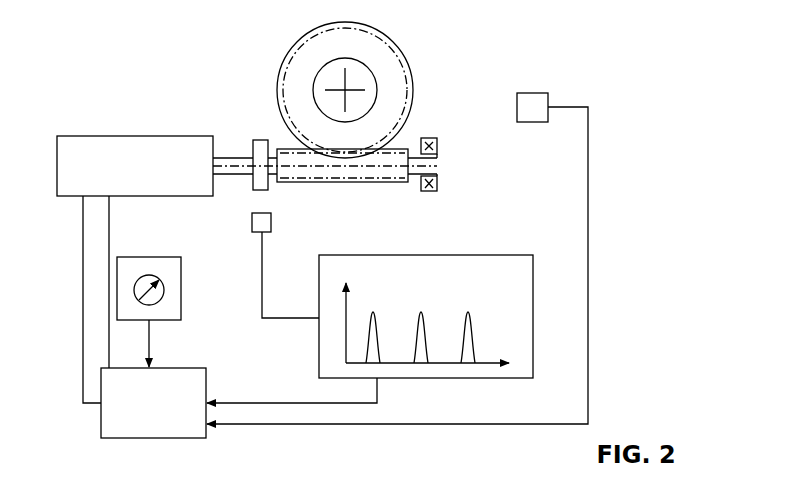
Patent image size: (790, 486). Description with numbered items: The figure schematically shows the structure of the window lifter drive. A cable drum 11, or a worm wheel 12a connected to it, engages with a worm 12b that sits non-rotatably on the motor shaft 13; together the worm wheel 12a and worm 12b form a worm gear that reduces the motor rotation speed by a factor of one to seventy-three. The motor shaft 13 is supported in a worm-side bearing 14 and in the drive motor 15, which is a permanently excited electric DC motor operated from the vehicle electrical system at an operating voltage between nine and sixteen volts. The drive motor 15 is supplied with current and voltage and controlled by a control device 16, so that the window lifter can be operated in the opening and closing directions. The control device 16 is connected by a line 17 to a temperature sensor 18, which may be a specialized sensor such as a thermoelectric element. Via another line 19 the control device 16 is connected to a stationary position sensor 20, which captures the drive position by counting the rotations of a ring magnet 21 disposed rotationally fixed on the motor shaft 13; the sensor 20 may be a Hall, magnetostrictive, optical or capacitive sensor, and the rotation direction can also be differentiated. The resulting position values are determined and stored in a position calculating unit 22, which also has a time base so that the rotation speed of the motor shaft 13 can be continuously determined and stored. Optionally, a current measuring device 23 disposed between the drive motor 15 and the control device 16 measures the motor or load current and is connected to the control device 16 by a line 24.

The cable drum 11 is at (360, 61).
The worm wheel 12a is at (412, 72).
The worm 12b is at (358, 182).
The motor shaft 13 is at (230, 158).
The worm-side bearing 14 is at (437, 140).
The drive motor 15 is at (128, 136).
The control device 16 is at (144, 317).
The line 17 is at (588, 210).
The temperature sensor 18 is at (530, 93).
The line 19 is at (255, 403).
The position sensor 20 is at (252, 222).
The ring magnet 21 is at (260, 140).
The position calculating unit 22 is at (533, 333).
The current measuring device 23 is at (181, 277).
The line 24 is at (149, 340).